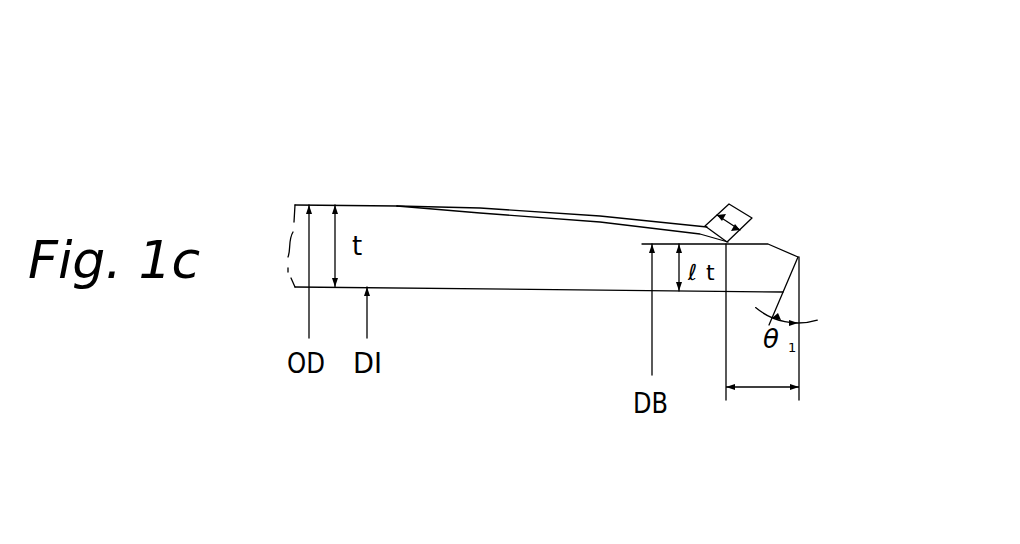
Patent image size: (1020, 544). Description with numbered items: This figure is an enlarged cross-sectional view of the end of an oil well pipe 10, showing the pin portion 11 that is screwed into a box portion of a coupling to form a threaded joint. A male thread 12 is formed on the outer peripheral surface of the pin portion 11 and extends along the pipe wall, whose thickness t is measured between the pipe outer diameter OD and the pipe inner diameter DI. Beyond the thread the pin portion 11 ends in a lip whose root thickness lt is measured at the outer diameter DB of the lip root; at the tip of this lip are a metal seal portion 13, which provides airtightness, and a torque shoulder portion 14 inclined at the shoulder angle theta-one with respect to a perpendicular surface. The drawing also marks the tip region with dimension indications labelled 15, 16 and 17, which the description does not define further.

The pipe 10 is at (323, 205).
The pin portion 11 is at (502, 243).
The male thread 12 is at (635, 227).
The metal seal portion 13 is at (790, 250).
The torque shoulder portion 14 is at (786, 288).
The cutting tip 15 is at (722, 205).
The tip width dimension 16 is at (740, 208).
The tip length dimension 17 is at (763, 387).